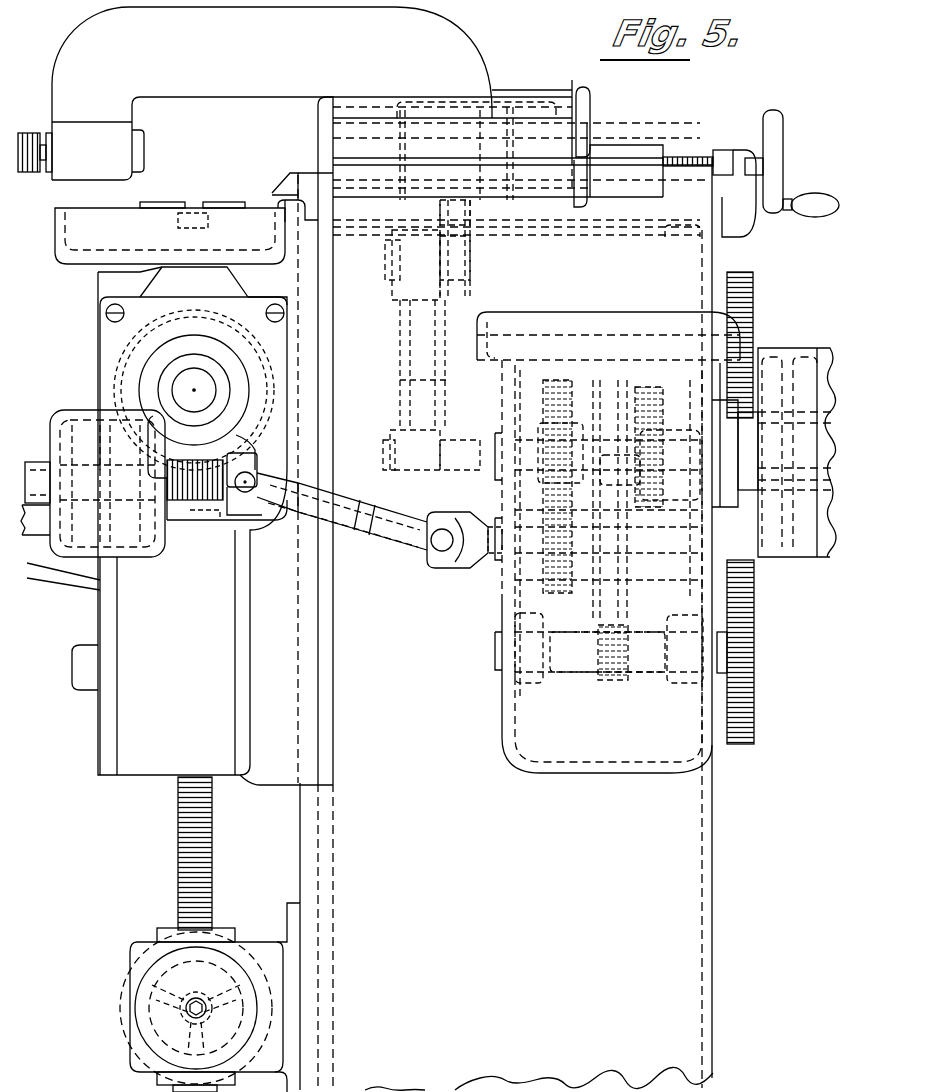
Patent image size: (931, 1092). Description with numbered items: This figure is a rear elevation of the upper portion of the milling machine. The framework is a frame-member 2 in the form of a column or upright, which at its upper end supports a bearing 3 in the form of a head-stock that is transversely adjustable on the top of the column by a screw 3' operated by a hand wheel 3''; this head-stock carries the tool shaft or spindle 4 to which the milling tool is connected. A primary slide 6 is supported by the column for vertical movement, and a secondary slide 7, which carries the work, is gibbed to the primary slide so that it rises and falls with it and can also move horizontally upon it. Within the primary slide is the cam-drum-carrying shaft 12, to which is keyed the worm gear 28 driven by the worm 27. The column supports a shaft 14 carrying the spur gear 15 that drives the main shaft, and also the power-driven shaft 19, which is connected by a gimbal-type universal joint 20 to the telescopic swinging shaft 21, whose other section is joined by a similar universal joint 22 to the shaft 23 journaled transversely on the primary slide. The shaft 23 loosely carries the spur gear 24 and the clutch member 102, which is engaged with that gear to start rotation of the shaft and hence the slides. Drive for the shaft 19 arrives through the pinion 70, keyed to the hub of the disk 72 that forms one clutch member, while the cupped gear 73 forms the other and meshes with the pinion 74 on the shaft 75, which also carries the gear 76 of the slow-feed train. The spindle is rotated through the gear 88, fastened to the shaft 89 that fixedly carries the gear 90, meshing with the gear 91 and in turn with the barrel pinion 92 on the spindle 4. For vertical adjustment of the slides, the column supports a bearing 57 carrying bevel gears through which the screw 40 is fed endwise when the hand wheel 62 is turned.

The frame-member 2 is at (718, 856).
The bearing 3 is at (523, 110).
The screw 3' is at (688, 138).
The hand wheel 3'' is at (776, 173).
The shaft or spindle 4 is at (80, 30).
The primary slide 6 is at (128, 726).
The secondary slide 7 is at (214, 202).
The shaft 12 is at (188, 390).
The shaft 14 is at (604, 452).
The spur gear 15 is at (626, 391).
The shaft 19 is at (484, 562).
The universal joint 20 is at (427, 576).
The telescopic swinging shaft 21 is at (342, 534).
The universal joint 22 is at (270, 525).
The shaft 23 is at (204, 531).
The spur gear 24 is at (72, 448).
The worm 27 is at (172, 527).
The worm gear 28 is at (151, 349).
The screw 40 is at (178, 856).
The bearing 57 is at (286, 914).
The hand wheel 62 is at (125, 1016).
The pinion 70 is at (556, 622).
The disk 72 is at (595, 614).
The cupped gear 73 is at (644, 458).
The pinion 74 is at (618, 682).
The shaft 75 is at (646, 624).
The gear 76 is at (752, 602).
The gear 88 is at (752, 293).
The shaft 89 is at (582, 336).
The gear 90 is at (446, 387).
The gear 91 is at (464, 210).
The barrel pinion 92 is at (463, 106).
The clutch member 102 is at (104, 584).